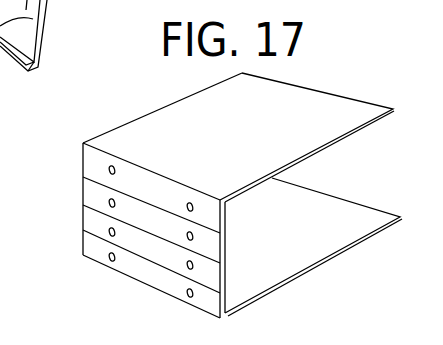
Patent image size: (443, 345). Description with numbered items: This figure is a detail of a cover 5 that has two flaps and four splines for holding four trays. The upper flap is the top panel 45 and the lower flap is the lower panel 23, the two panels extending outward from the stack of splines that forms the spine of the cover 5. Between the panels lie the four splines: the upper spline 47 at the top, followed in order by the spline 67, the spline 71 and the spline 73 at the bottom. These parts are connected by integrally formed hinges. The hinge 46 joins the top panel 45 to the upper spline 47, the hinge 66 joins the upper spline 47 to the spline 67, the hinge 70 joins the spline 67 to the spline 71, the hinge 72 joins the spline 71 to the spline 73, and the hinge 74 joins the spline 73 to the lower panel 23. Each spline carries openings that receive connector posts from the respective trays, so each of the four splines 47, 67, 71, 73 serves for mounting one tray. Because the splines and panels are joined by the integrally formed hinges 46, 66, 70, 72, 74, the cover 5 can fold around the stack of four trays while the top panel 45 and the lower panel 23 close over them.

The cover 5 is at (363, 101).
The lower panel 23 is at (352, 246).
The top panel 45 is at (193, 96).
The hinge 46 is at (113, 157).
The upper spline 47 is at (95, 163).
The hinge 66 is at (153, 207).
The spline 67 is at (88, 230).
The hinge 70 is at (85, 205).
The spline 71 is at (142, 245).
The hinge 72 is at (123, 207).
The spline 73 is at (158, 277).
The hinge 74 is at (193, 306).